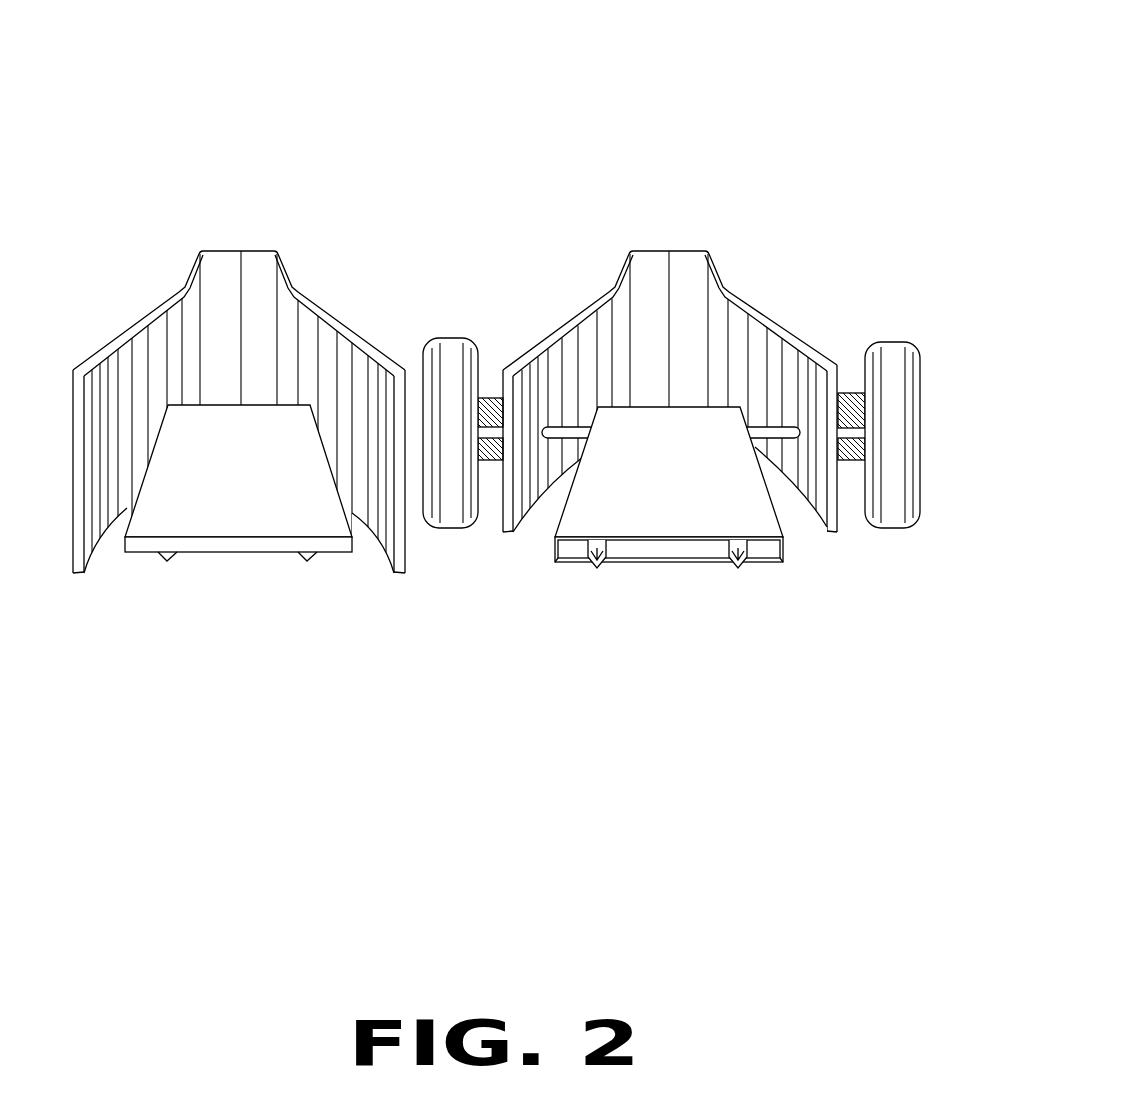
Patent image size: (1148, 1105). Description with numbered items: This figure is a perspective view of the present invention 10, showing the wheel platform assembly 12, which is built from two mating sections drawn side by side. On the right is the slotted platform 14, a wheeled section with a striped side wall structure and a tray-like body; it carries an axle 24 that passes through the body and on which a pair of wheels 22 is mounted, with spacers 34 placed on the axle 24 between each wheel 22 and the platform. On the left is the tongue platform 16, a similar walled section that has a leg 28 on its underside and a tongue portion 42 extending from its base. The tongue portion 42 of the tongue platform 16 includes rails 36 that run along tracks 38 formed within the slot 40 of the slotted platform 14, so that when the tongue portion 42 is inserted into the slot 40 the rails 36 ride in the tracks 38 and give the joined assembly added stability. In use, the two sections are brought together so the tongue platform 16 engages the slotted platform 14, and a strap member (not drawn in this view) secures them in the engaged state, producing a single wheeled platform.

The present invention 10 is at (671, 330).
The wheel platform assembly 12 is at (747, 197).
The slotted platform 14 is at (703, 433).
The tongue platform 16 is at (168, 432).
The wheels 22 is at (470, 345).
The axle 24 is at (575, 432).
The leg 28 is at (98, 542).
The spacers 34 is at (490, 397).
The rails 36 is at (163, 557).
The tracks 38 is at (744, 567).
The slot 40 is at (667, 550).
The tongue portion 42 is at (235, 550).